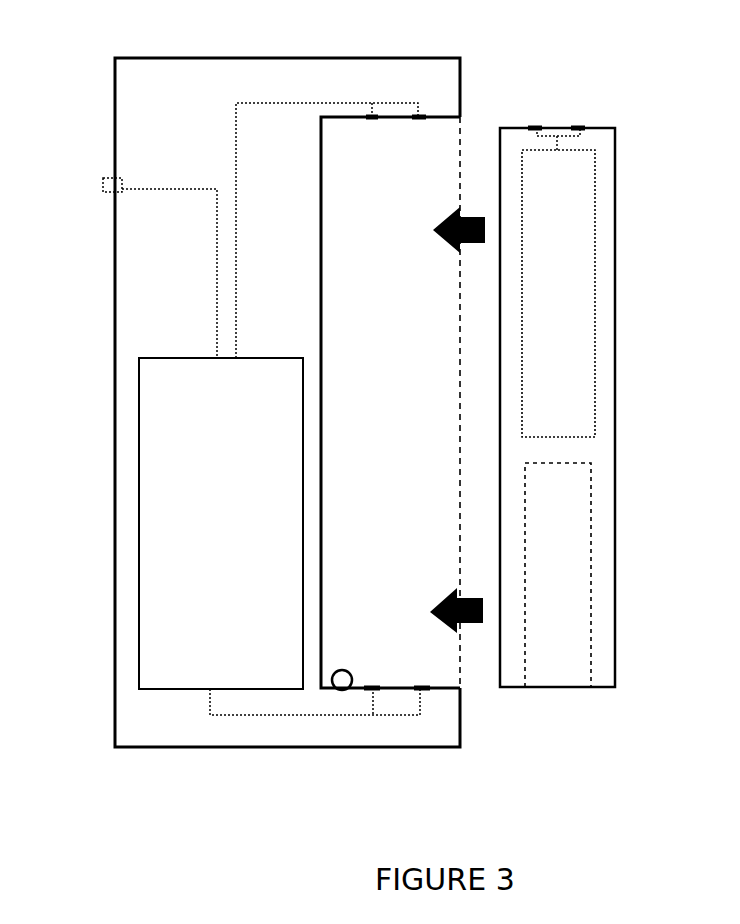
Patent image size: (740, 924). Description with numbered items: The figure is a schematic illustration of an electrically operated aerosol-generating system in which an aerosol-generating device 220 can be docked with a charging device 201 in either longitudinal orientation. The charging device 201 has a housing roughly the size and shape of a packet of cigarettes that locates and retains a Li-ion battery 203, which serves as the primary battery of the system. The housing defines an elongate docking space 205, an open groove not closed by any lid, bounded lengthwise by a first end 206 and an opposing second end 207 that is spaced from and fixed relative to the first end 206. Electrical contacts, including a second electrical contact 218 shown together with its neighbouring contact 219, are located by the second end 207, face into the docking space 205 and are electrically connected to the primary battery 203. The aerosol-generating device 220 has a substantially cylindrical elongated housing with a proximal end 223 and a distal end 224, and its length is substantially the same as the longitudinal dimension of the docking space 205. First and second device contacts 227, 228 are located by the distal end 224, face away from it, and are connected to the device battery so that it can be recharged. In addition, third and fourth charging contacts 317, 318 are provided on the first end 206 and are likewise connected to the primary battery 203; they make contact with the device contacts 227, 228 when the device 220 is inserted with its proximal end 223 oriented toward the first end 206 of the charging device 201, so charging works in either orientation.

The charging device 201 is at (244, 760).
The Li-ion battery 203 is at (165, 553).
The docking space 205 is at (438, 658).
The first end 206 is at (468, 125).
The second end 207 is at (345, 690).
The second electrical contact 218 is at (422, 684).
The lower contact 219 is at (372, 684).
The aerosol-generating device 220 is at (622, 305).
The proximal end 223 is at (602, 687).
The distal end 224 is at (612, 128).
The first device contact 227 is at (578, 127).
The second device contact 228 is at (535, 127).
The third charging contact 317 is at (368, 122).
The fourth charging contact 318 is at (418, 122).